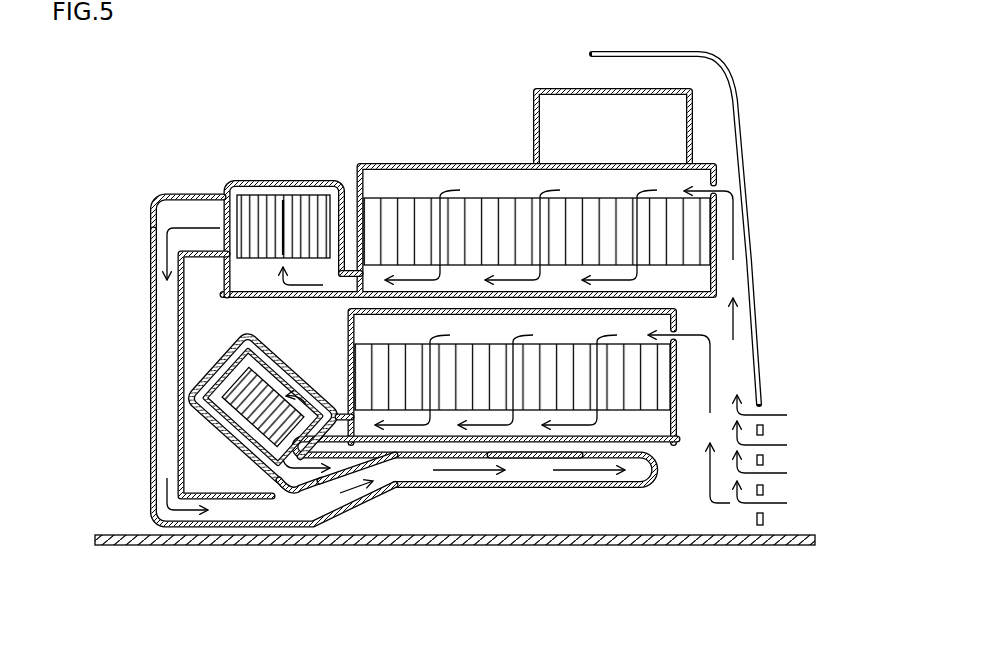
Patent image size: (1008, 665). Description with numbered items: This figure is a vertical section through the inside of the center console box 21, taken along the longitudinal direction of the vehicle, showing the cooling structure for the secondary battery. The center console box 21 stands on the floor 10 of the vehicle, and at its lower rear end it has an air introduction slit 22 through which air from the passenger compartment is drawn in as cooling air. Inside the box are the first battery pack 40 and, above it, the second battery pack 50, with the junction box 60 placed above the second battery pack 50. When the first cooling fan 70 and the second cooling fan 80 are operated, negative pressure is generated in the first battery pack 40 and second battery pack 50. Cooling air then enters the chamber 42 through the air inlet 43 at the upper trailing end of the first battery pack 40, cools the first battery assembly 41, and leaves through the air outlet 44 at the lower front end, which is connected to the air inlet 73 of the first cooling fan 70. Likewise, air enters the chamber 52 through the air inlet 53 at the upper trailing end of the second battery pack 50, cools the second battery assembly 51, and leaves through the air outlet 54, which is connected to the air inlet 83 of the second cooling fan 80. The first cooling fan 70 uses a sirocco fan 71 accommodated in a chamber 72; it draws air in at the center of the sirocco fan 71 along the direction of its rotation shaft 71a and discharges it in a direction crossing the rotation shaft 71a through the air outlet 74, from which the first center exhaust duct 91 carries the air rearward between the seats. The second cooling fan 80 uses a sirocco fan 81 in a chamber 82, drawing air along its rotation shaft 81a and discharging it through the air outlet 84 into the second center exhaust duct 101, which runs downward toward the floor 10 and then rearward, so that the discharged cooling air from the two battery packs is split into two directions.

The floor 10 is at (783, 537).
The center console box 21 is at (735, 129).
The air introduction slit 22 is at (765, 411).
The first battery pack 40 is at (502, 464).
The first battery assembly 41 is at (628, 393).
The chamber 42 is at (533, 457).
The air inlet 43 is at (679, 459).
The air outlet 44 is at (409, 456).
The second battery pack 50 is at (507, 192).
The second battery assembly 51 is at (472, 212).
The chamber 52 is at (431, 165).
The air inlet 53 is at (713, 184).
The air outlet 54 is at (350, 311).
The junction box 60 is at (556, 88).
The first cooling fan 70 is at (269, 471).
The sirocco fan 71 is at (251, 462).
The rotation shaft 71a is at (302, 372).
The chamber 72 is at (224, 437).
The air inlet 73 is at (336, 432).
The air outlet 74 is at (289, 481).
The second cooling fan 80 is at (257, 169).
The sirocco fan 81 is at (266, 200).
The rotation shaft 81a is at (284, 174).
The chamber 82 is at (238, 181).
The air inlet 83 is at (347, 180).
The air outlet 84 is at (196, 213).
The first center exhaust duct 91 is at (384, 447).
The second center exhaust duct 101 is at (151, 348).